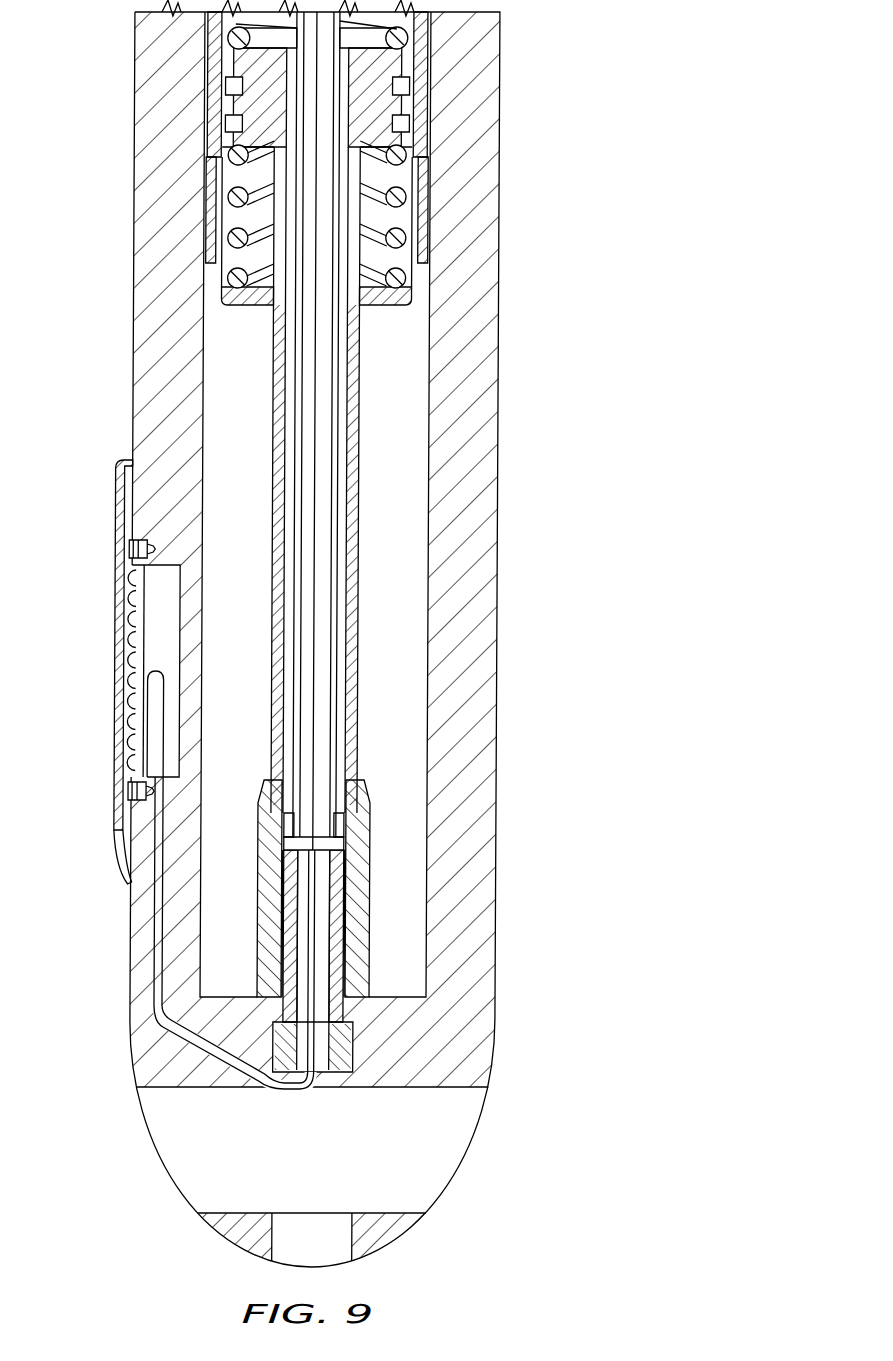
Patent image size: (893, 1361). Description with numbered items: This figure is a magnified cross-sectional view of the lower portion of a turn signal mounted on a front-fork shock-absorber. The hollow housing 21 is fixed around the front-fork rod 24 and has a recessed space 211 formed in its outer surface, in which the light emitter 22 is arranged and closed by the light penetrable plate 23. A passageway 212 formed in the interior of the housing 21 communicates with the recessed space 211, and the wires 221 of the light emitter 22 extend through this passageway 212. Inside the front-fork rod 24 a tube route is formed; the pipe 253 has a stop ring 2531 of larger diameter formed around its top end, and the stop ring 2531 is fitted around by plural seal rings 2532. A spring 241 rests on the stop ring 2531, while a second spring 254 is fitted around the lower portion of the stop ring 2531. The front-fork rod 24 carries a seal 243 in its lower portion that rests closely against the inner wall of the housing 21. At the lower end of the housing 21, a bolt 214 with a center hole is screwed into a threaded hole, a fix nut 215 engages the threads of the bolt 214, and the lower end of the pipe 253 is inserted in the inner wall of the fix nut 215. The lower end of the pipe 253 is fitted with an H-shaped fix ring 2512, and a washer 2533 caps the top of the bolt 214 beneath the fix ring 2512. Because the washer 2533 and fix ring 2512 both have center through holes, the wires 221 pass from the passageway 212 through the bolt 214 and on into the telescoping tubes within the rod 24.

The hollow housing 21 is at (457, 195).
The recessed space 211 is at (168, 600).
The passageway 212 is at (220, 1047).
The bolt 214 is at (345, 1048).
The fix nut 215 is at (370, 925).
The light emitter 22 is at (143, 622).
The wires 221 is at (320, 360).
The light penetrable plate 23 is at (121, 688).
The front-fork rod 24 is at (426, 85).
The spring 241 is at (228, 40).
The seal 243 is at (424, 172).
The pipe 253 is at (357, 330).
The spring 254 is at (401, 246).
The H-shaped fix ring 2512 is at (339, 845).
The stop ring 2531 is at (386, 60).
The seal rings 2532 is at (406, 125).
The washer 2533 is at (341, 883).